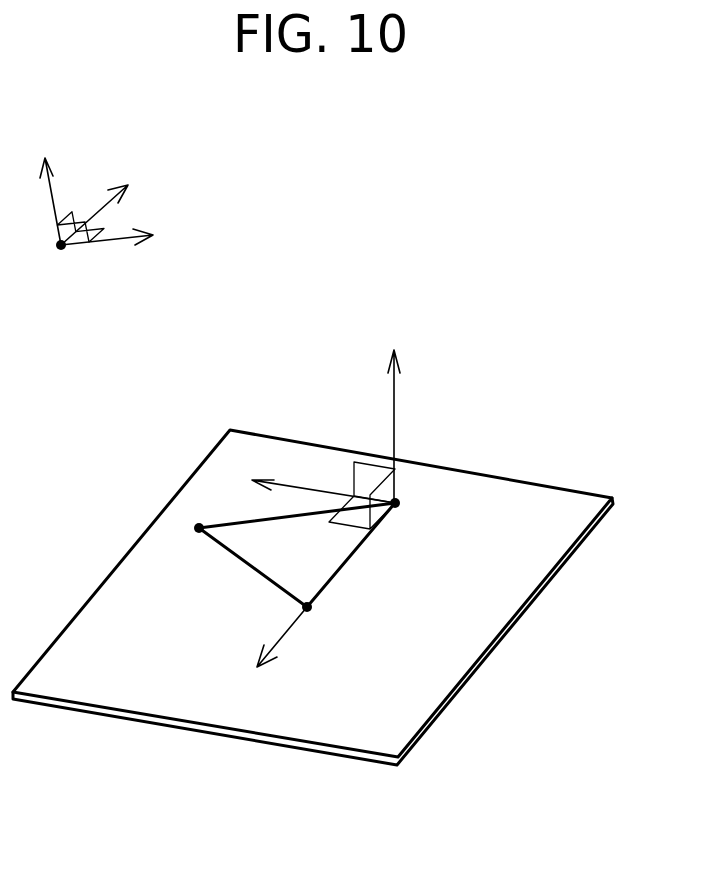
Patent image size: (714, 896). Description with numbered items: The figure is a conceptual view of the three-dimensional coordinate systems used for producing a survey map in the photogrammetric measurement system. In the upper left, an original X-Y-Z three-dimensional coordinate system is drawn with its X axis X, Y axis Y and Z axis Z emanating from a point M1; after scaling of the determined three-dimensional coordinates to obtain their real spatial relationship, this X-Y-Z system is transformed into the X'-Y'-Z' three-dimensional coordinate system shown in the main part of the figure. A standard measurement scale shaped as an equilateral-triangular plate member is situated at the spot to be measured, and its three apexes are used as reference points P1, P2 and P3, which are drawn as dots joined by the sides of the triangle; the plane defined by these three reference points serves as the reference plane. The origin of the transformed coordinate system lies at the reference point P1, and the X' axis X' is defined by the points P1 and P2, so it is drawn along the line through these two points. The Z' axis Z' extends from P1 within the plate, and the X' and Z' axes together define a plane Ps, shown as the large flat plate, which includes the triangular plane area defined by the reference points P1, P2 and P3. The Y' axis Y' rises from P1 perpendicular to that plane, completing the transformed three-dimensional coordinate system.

The reference point M1 (origin of XYZ coordinate system) M1 is at (56, 254).
The X-axis X is at (123, 238).
The Y-axis Y is at (109, 199).
The Z-axis Z is at (46, 179).
The plane Ps is at (537, 517).
The reference point P1 is at (391, 496).
The reference point P2 is at (348, 574).
The reference point P3 is at (284, 555).
The X'-axis X' is at (255, 653).
The Y'-axis Y' is at (397, 404).
The Z'-axis Z' is at (303, 478).